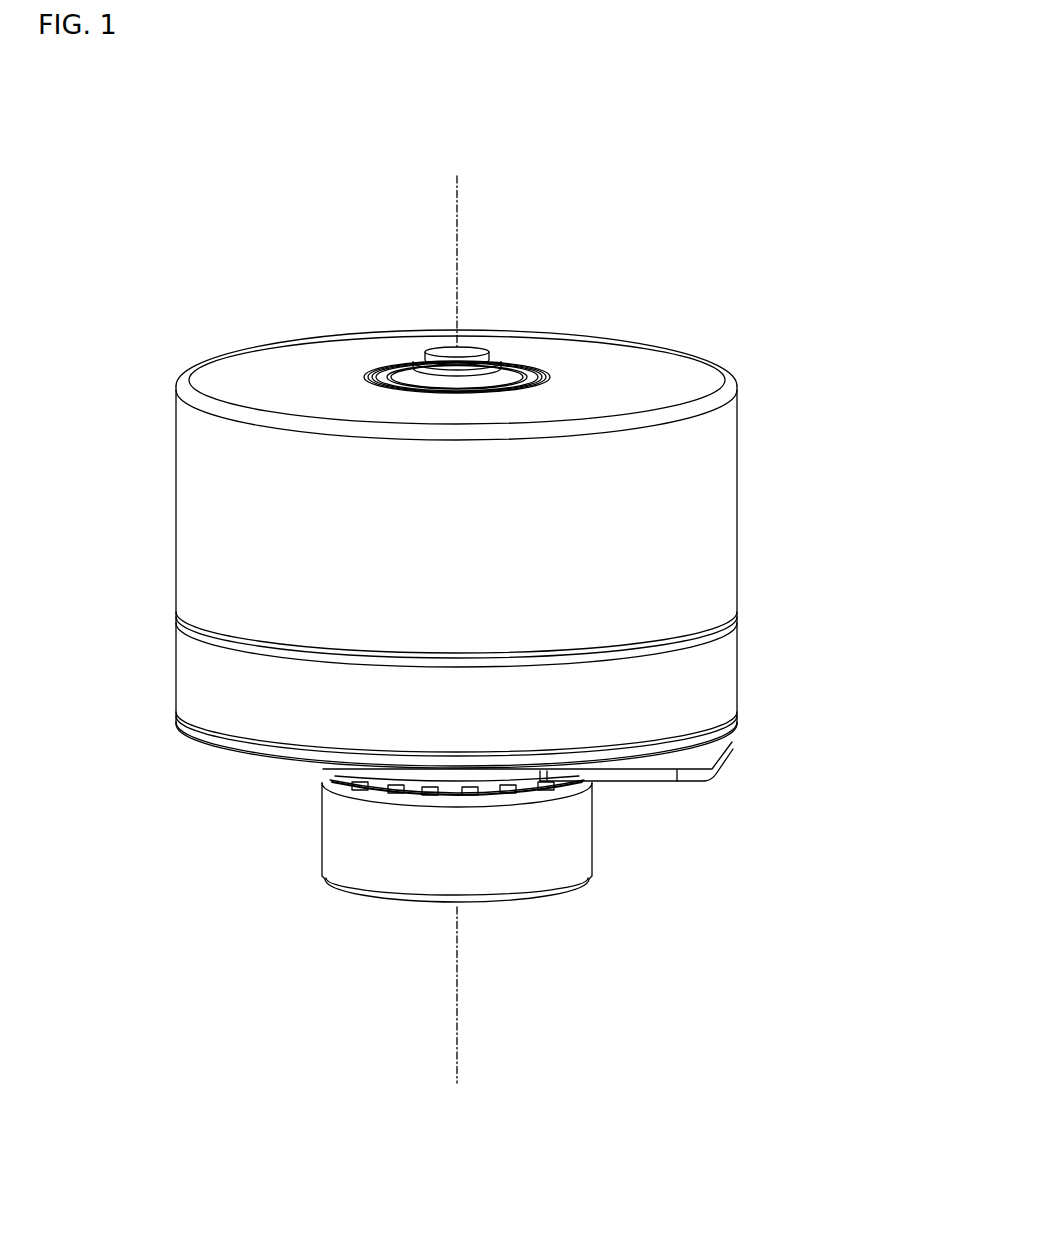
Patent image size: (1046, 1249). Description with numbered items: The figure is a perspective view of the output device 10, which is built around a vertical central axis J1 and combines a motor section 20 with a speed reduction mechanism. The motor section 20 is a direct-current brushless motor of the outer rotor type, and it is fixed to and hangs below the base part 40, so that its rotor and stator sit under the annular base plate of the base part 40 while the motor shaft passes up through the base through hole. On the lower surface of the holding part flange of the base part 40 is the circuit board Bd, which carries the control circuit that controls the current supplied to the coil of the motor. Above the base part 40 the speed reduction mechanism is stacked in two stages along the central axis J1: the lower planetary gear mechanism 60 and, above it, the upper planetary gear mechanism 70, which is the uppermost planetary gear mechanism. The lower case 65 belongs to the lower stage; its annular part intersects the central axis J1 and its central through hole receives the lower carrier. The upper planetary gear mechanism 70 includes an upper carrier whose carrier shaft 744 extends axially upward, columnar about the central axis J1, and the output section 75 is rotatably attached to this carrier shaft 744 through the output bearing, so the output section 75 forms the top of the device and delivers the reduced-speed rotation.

The output device 10 is at (273, 258).
The central axis J1 is at (458, 185).
The motor section 20 is at (553, 847).
The base part 40 is at (174, 721).
The lower planetary gear mechanism 60 is at (748, 659).
The lower case 65 is at (200, 650).
The upper planetary gear mechanism 70 is at (748, 433).
The output section 75 is at (660, 370).
The carrier shaft 744 is at (470, 355).
The circuit board Bd is at (733, 756).